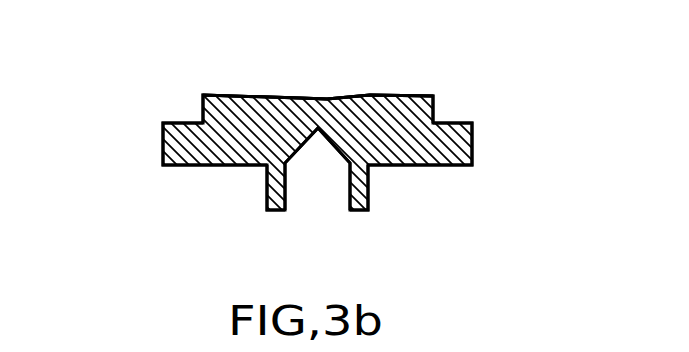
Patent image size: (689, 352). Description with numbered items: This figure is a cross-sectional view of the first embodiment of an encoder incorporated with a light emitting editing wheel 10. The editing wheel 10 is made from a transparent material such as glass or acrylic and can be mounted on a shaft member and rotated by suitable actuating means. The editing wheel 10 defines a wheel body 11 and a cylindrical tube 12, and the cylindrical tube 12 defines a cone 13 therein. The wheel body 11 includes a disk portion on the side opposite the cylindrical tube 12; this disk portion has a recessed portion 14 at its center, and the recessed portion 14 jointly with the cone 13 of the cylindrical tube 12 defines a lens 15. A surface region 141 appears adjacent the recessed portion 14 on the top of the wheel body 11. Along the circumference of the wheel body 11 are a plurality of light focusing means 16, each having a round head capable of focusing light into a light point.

The editing wheel 10 is at (175, 108).
The wheel body 11 is at (222, 133).
The cylindrical tube 12 is at (267, 190).
The cone 13 is at (313, 193).
The recessed portion 14 is at (219, 103).
The lens 15 is at (297, 98).
The top surface portion 141 is at (327, 97).
The light focusing means 16 is at (472, 160).